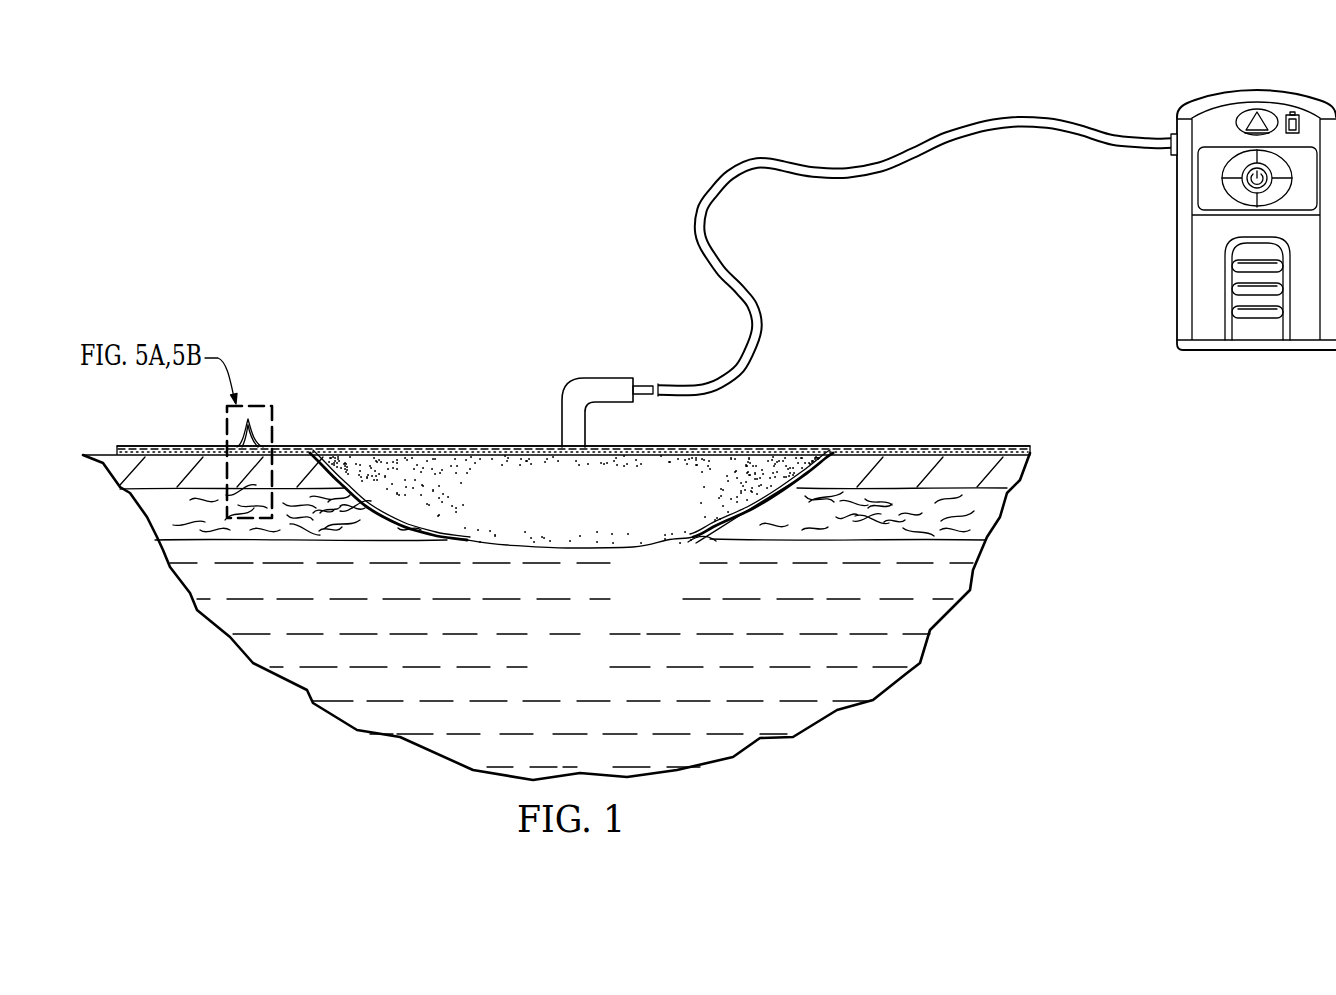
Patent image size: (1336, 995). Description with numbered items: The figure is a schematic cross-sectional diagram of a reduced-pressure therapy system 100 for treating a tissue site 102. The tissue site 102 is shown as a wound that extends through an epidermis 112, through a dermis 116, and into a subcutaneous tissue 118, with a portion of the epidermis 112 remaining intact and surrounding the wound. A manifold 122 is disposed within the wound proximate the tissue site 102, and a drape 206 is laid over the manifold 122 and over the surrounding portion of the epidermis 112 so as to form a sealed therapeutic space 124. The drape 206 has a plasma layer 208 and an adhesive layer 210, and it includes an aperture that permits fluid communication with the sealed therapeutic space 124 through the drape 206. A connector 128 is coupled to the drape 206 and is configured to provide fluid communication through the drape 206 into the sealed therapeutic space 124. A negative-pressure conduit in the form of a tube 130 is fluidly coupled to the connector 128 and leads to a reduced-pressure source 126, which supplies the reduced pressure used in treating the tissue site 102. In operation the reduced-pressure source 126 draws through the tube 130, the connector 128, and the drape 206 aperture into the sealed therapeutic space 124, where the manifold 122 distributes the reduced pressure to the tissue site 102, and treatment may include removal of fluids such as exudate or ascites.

The reduced-pressure therapy system 100 is at (503, 262).
The tissue site 102 is at (694, 540).
The epidermis 112 is at (1010, 475).
The dermis 116 is at (153, 518).
The subcutaneous tissue 118 is at (595, 663).
The manifold 122 is at (593, 510).
The sealed therapeutic space 124 is at (822, 458).
The reduced-pressure source 126 is at (1172, 284).
The connector 128 is at (573, 383).
The tube 130 is at (702, 210).
The drape 206 is at (366, 446).
The plasma layer 208 is at (1000, 448).
The adhesive layer 210 is at (967, 448).